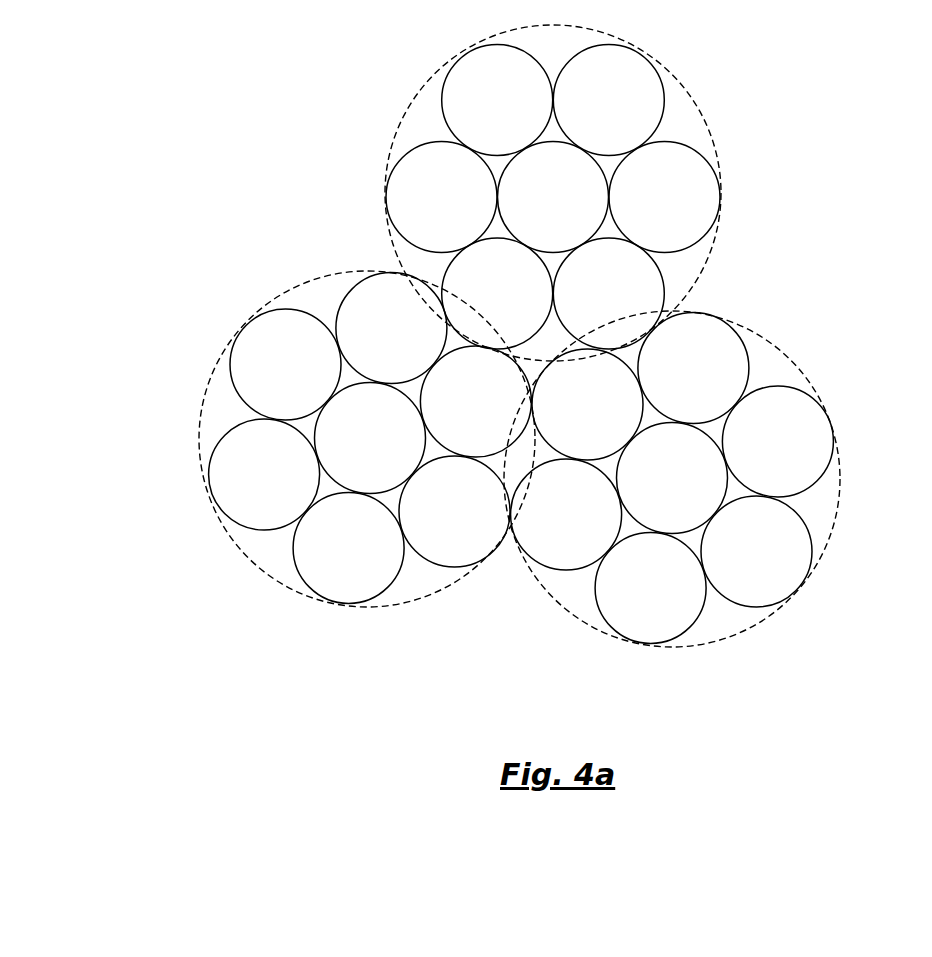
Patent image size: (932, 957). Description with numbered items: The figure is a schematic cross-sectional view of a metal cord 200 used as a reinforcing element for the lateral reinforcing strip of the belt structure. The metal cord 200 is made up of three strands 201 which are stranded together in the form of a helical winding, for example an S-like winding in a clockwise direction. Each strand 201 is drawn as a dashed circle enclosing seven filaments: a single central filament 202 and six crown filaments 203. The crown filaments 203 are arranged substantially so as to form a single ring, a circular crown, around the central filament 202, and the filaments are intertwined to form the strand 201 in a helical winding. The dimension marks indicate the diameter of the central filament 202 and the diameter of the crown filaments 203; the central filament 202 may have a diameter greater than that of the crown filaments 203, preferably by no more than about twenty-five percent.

The metal cord 200 is at (160, 146).
The strand 201 is at (708, 76).
The central filament 202 is at (766, 141).
The crown filaments 203 is at (521, 344).